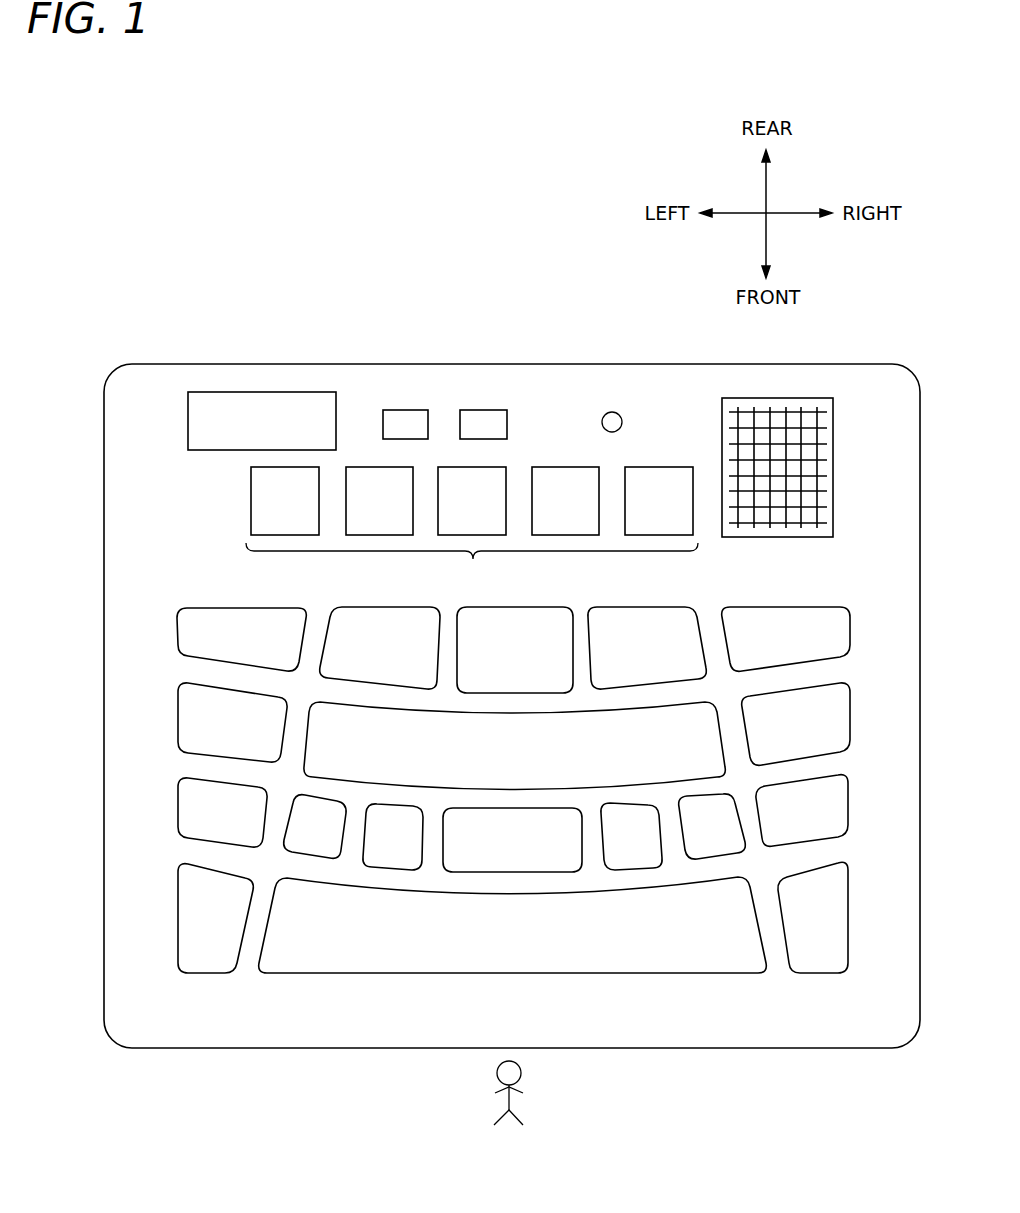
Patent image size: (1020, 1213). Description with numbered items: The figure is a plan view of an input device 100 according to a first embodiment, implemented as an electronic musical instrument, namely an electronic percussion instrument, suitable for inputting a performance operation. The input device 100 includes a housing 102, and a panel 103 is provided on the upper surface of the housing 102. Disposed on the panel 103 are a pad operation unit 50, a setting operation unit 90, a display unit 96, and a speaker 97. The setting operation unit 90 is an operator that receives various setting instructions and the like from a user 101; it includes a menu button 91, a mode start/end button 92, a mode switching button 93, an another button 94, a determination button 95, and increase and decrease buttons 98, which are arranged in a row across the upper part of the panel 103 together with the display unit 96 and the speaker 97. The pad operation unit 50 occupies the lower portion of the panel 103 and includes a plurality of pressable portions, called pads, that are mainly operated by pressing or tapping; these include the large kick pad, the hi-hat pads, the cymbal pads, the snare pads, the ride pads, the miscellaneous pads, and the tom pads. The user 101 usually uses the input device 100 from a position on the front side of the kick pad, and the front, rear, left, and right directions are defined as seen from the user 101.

The input device 100 is at (508, 287).
The housing 102 is at (205, 364).
The panel 103 is at (182, 571).
The pad operation unit 50 is at (161, 605).
The setting operation unit 90 is at (472, 567).
The menu button 91 is at (251, 497).
The mode start/end button 92 is at (362, 467).
The mode switching button 93 is at (490, 467).
The another button 94 is at (557, 467).
The determination button 95 is at (660, 467).
The display unit 96 is at (188, 422).
The speaker 97 is at (833, 437).
The increase and decrease buttons 98 is at (408, 410).
The user 101 is at (547, 1077).